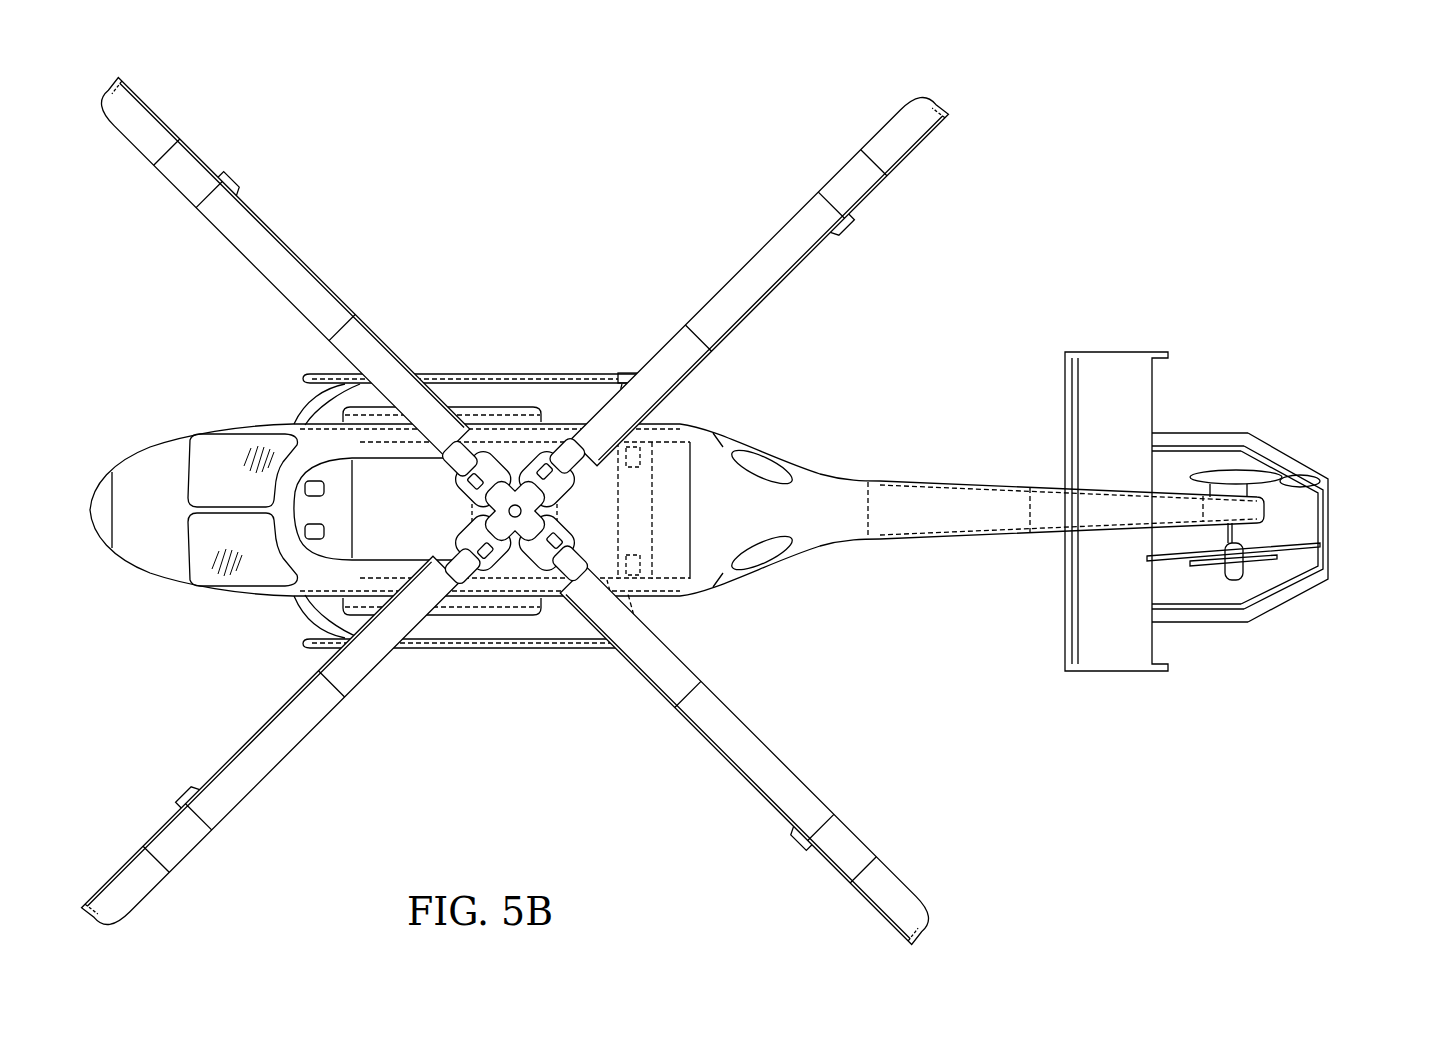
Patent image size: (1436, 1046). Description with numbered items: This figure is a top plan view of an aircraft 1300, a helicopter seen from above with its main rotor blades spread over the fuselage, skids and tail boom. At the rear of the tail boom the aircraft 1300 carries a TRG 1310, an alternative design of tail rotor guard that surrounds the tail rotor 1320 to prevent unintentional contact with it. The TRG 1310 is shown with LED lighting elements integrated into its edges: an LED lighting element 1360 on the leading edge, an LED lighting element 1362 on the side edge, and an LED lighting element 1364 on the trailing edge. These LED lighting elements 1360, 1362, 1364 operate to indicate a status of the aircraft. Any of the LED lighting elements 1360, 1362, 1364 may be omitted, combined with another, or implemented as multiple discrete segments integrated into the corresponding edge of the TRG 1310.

The aircraft 1300 is at (1082, 113).
The TRG 1310 is at (1262, 662).
The tail rotor 1320 is at (1268, 572).
The LED lighting element 1360 is at (1065, 600).
The LED lighting element 1362 is at (1197, 624).
The LED lighting element 1364 is at (1331, 560).